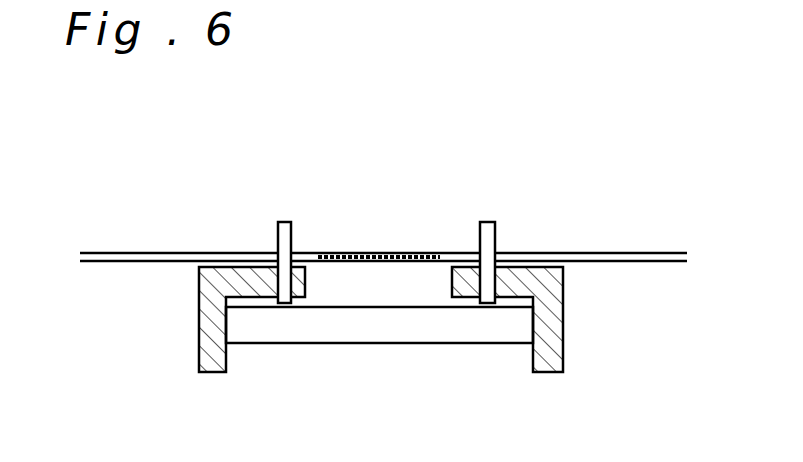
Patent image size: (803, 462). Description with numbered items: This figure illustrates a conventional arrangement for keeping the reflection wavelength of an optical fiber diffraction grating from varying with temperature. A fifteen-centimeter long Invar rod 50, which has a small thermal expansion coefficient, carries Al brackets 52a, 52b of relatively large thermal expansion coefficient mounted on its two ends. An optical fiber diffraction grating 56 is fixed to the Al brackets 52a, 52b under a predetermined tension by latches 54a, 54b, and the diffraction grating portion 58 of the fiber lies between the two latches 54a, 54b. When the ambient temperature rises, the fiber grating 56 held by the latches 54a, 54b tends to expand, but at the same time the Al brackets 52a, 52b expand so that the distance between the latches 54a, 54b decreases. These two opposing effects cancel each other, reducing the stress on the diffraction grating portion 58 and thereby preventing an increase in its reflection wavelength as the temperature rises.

The Invar rod 50 is at (372, 345).
The Al bracket 52a is at (199, 335).
The Al bracket 52b is at (565, 321).
The latch 54a is at (285, 222).
The latch 54b is at (492, 222).
The optical fiber diffraction grating 56 is at (148, 253).
The diffraction grating portion 58 is at (440, 240).